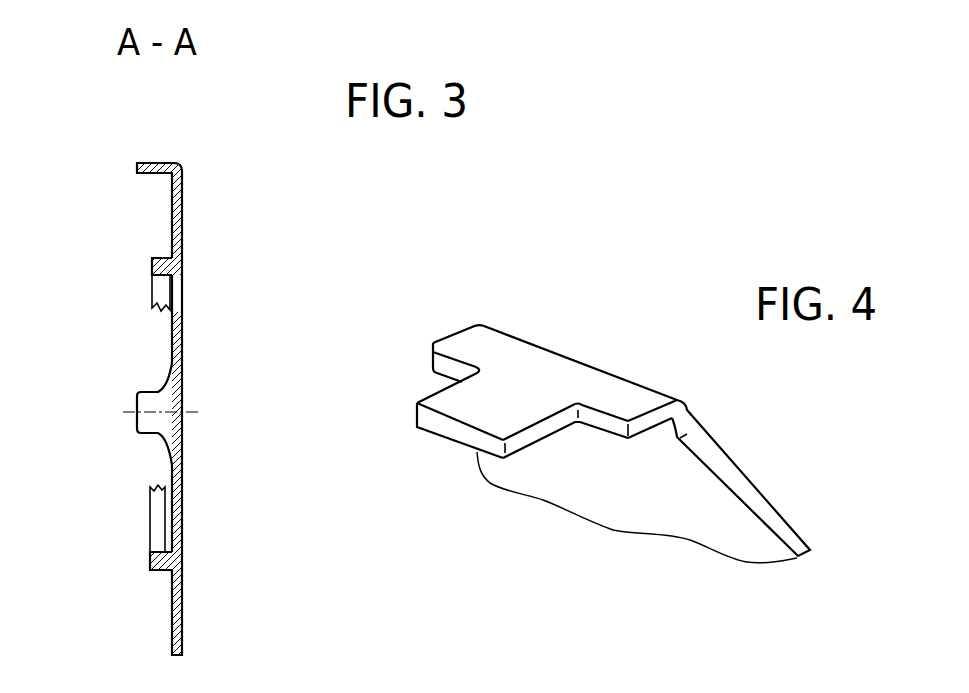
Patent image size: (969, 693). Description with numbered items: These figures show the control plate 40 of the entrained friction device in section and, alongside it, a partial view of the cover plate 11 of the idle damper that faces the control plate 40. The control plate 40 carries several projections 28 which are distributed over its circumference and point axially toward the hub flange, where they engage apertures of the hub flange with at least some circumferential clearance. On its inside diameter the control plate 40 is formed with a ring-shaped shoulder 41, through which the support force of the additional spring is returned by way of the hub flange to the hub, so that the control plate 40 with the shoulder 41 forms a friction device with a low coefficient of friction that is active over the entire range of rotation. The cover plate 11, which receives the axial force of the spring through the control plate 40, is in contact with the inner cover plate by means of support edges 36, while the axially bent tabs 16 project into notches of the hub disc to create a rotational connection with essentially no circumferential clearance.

In FIG. 3, the projection 28 is at (158, 163).
In FIG. 3, the control plate 40 is at (183, 217).
In FIG. 3, the ring-shaped shoulder 41 is at (153, 267).
In FIG. 4, the tab 16 is at (457, 408).
In FIG. 4, the support edge 36 is at (592, 418).
In FIG. 4, the cover plate 11 is at (722, 467).